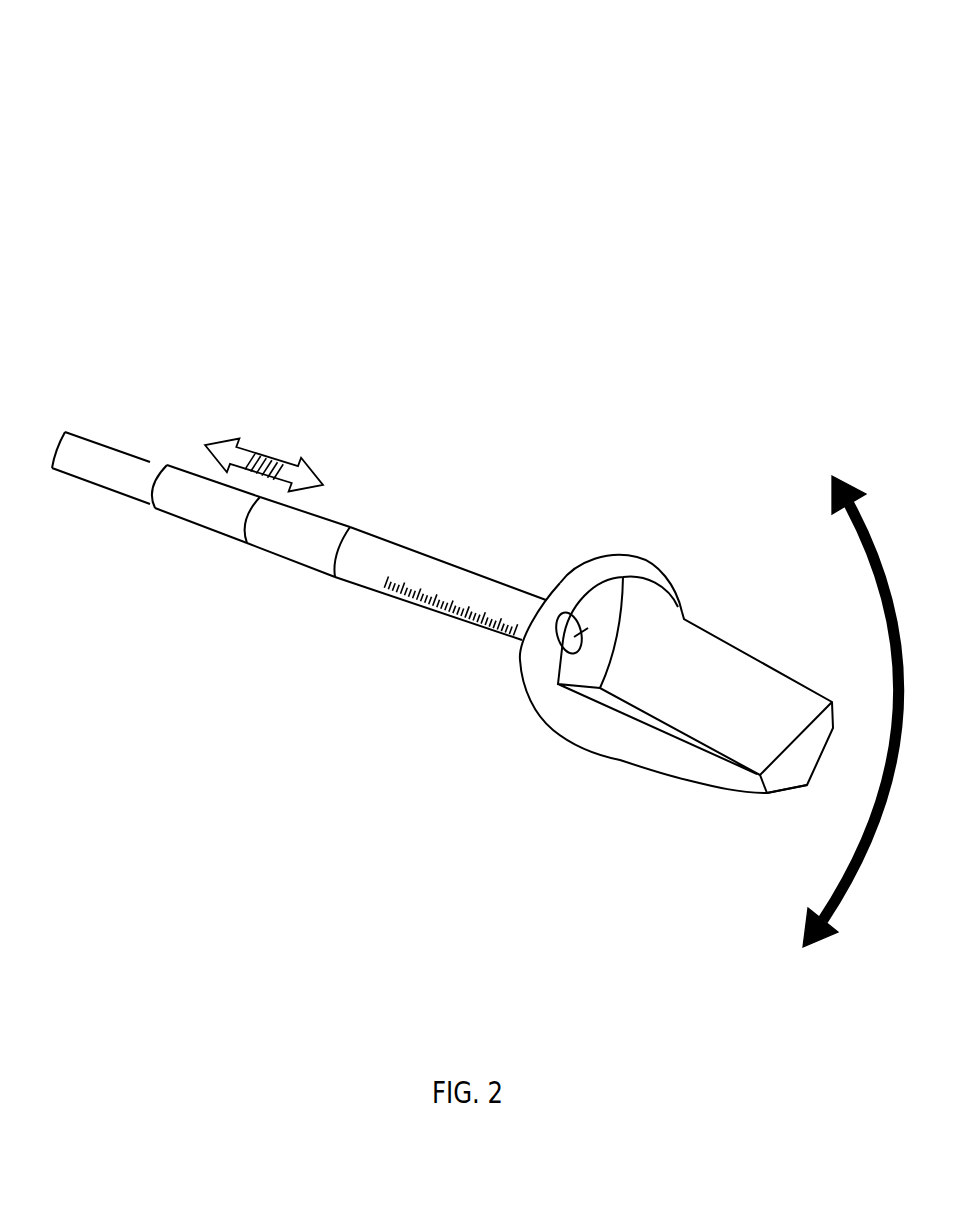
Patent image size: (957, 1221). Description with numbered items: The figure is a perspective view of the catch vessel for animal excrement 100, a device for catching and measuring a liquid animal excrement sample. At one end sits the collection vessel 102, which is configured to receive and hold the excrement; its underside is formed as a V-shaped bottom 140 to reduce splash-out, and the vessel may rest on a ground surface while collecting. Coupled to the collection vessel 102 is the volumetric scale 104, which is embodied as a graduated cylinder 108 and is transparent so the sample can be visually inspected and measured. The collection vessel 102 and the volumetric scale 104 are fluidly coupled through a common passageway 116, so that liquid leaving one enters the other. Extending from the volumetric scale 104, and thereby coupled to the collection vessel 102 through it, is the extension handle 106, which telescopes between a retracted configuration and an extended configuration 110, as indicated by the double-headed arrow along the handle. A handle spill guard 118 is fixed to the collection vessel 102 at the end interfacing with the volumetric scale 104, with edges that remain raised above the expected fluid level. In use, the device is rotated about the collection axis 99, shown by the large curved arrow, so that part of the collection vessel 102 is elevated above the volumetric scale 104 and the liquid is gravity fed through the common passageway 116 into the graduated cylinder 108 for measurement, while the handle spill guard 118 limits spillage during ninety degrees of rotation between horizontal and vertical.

The catch vessel for animal excrement 100 is at (720, 65).
The collection vessel 102 is at (758, 702).
The volumetric scale 104 is at (433, 603).
The extension handle 106 is at (352, 525).
The graduated cylinder 108 is at (463, 582).
The extended configuration 110 is at (198, 527).
The common passageway 116 is at (573, 632).
The handle spill guard 118 is at (655, 568).
The V-shaped bottom 140 is at (803, 789).
The collection axis 99 is at (850, 893).